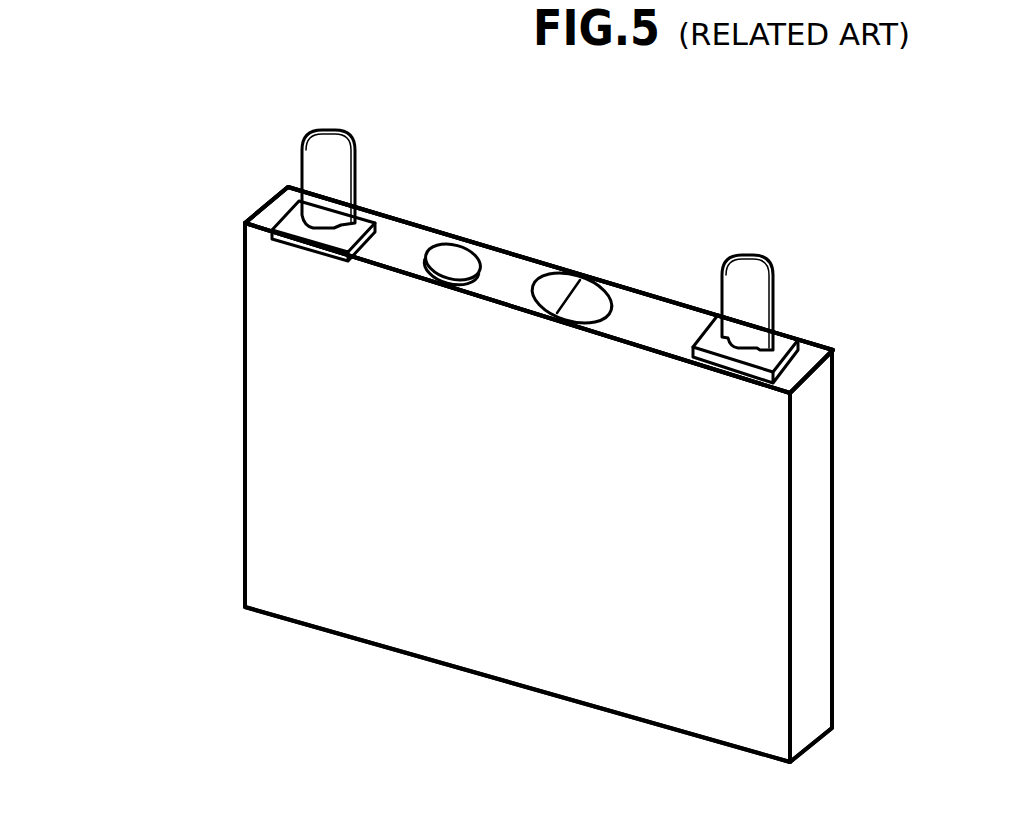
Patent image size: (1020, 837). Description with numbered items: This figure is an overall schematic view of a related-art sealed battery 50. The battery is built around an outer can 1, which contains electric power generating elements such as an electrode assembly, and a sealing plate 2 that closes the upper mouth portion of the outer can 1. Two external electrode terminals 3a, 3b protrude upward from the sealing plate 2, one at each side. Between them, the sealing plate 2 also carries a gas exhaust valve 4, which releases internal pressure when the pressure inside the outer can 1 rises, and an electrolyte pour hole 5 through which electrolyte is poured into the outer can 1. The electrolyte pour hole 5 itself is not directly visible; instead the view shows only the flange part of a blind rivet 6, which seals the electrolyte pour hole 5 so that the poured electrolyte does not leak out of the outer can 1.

The sealed battery 50 is at (125, 67).
The outer can 1 is at (337, 578).
The sealing plate 2 is at (809, 363).
The external electrode terminal 3a is at (319, 157).
The external electrode terminal 3b is at (742, 273).
The gas exhaust valve 4 is at (576, 280).
The electrolyte pour hole 5 is at (483, 258).
The blind rivet 6 is at (457, 255).